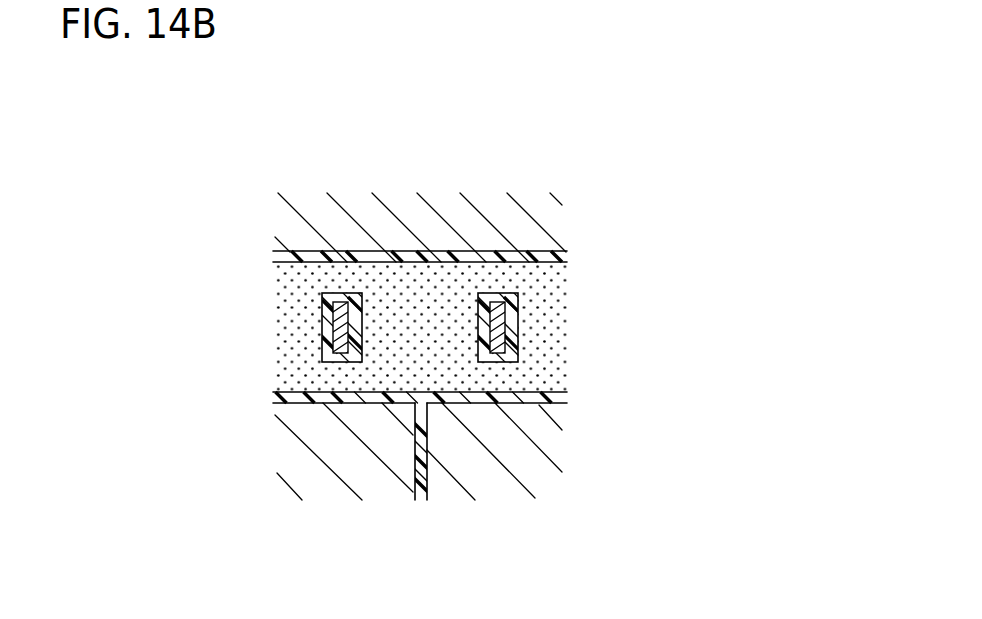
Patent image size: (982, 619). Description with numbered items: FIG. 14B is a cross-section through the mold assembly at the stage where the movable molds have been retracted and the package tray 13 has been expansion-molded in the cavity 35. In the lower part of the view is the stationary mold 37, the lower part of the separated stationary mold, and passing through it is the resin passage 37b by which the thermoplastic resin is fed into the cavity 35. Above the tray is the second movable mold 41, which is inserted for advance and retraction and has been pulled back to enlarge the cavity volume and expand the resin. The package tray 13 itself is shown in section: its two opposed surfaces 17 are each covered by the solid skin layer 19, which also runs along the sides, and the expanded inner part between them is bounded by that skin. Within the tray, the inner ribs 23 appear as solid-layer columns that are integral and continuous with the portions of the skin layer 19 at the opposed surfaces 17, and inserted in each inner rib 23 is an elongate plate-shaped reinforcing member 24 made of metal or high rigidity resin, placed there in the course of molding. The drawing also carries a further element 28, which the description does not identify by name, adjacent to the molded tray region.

The package tray 13 is at (537, 251).
The surfaces 17 is at (440, 263).
The skin layer 19 is at (422, 252).
The inner ribs 23 is at (323, 293).
The reinforcing members 24 is at (347, 301).
The sealing resin 28 is at (470, 253).
The cavity 35 is at (322, 392).
The stationary mold 37 is at (537, 480).
The resin passage 37b is at (427, 473).
The second movable mold 41 is at (540, 203).